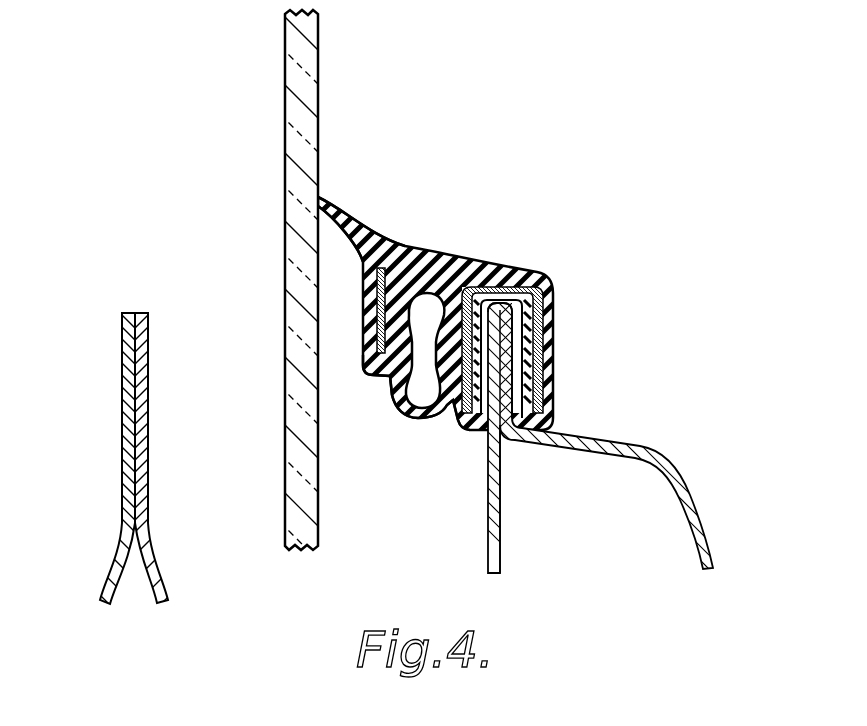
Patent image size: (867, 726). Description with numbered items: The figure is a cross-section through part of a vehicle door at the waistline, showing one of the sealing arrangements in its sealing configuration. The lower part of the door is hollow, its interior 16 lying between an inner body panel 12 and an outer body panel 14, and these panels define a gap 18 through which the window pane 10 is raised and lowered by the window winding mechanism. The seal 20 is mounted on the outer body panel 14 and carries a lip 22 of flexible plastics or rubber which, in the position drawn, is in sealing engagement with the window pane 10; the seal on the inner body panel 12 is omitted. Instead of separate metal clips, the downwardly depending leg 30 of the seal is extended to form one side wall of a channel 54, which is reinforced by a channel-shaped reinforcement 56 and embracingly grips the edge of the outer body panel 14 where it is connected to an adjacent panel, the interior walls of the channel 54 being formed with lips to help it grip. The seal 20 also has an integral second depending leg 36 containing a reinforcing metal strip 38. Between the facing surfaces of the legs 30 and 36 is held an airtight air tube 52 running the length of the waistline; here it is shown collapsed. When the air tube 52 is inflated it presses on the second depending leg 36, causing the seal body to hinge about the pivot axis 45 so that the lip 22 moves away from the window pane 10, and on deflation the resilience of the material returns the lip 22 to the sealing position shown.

The window pane 10 is at (318, 118).
The inner body panel 12 is at (130, 373).
The outer body panel 14 is at (653, 457).
The interior 16 is at (312, 617).
The gap 18 is at (213, 386).
The seal 20 is at (462, 182).
The lip 22 is at (345, 210).
The leg 30 is at (458, 418).
The second depending leg 36 is at (370, 363).
The reinforcing metal strip 38 is at (372, 311).
The pivot axis 45 is at (445, 268).
The air tube 52 is at (403, 418).
The channel 54 is at (557, 338).
The channel-shaped reinforcement 56 is at (547, 293).